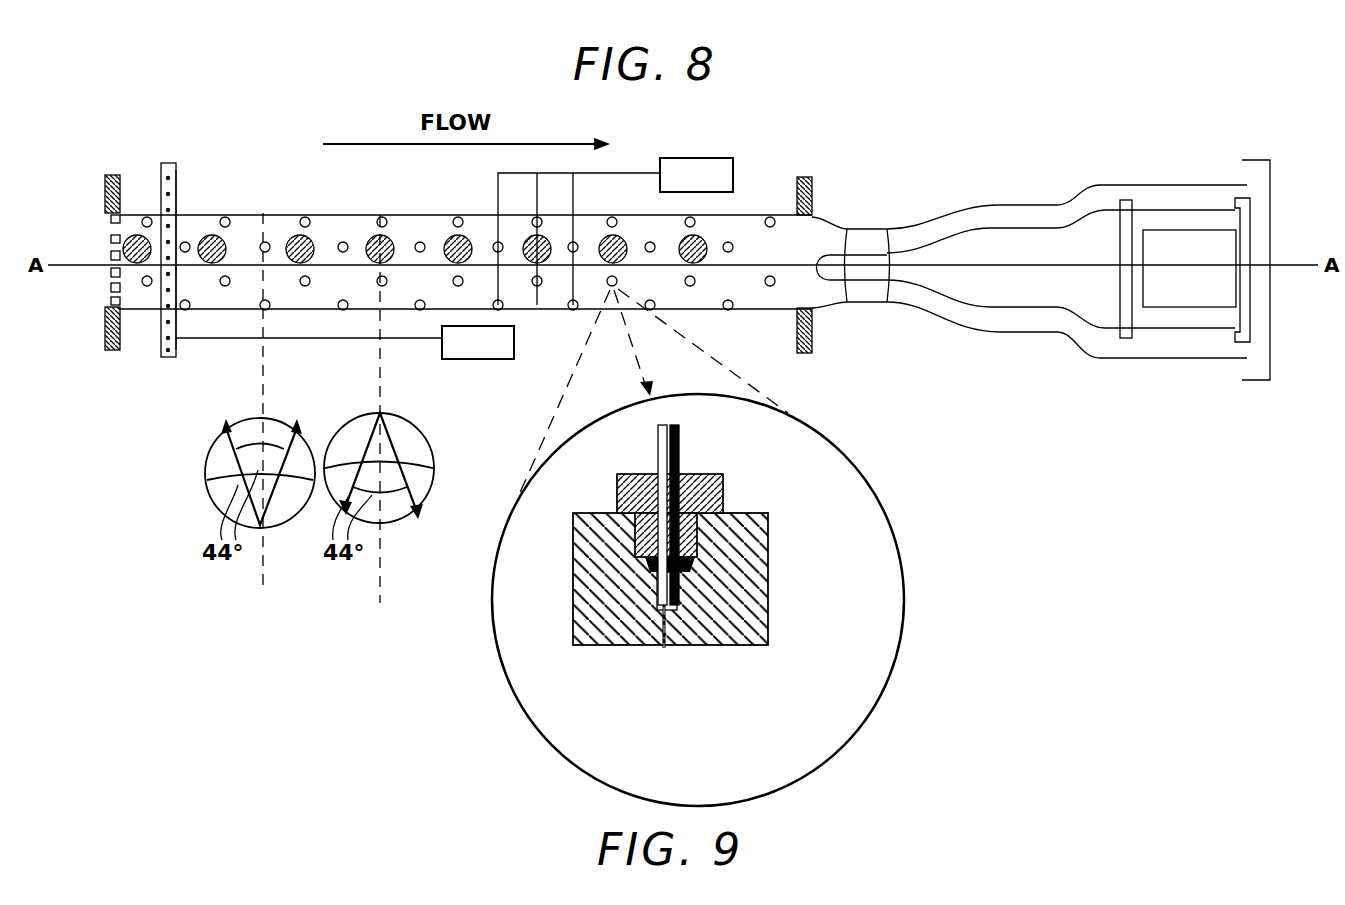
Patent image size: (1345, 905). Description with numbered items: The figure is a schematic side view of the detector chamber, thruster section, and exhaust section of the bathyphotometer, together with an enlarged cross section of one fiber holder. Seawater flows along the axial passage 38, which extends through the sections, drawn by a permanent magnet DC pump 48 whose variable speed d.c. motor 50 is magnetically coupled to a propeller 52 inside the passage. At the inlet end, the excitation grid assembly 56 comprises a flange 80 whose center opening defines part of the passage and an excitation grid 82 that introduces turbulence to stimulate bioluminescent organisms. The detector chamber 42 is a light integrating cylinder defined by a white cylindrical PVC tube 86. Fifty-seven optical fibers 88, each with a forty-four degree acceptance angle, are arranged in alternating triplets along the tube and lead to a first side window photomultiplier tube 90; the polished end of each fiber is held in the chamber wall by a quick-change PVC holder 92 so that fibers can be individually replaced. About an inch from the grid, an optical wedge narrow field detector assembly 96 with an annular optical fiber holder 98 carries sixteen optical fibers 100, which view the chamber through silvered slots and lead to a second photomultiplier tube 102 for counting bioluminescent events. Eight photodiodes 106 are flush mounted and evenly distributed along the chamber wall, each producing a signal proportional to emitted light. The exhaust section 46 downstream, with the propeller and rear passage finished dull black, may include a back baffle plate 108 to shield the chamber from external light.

In FIG. 8, the axial passage 38 is at (998, 318).
In FIG. 8, the detector chamber 42 is at (268, 200).
In FIG. 8, the exhaust section 46 is at (1162, 152).
In FIG. 8, the permanent magnet DC pump 48 is at (1012, 242).
In FIG. 8, the variable speed d.c. motor 50 is at (1185, 290).
In FIG. 8, the propeller 52 is at (865, 238).
In FIG. 8, the excitation grid assembly 56 is at (100, 203).
In FIG. 8, the flange 80 is at (104, 325).
In FIG. 8, the excitation grid 82 is at (122, 294).
In FIG. 8, the PVC tube 86 is at (750, 311).
In FIG. 9, the PVC tube 86 is at (582, 612).
In FIG. 8, the optical fibers 88 is at (421, 242).
In FIG. 9, the optical fibers 88 is at (680, 630).
In FIG. 8, the first side window photomultiplier tube 90 is at (702, 157).
In FIG. 9, the quick-change PVC holder 92 is at (724, 491).
In FIG. 8, the optical wedge narrow field detector assembly 96 is at (188, 166).
In FIG. 8, the annular optical fiber holder 98 is at (177, 204).
In FIG. 8, the optical fibers 100 is at (160, 180).
In FIG. 8, the second photomultiplier tube 102 is at (500, 359).
In FIG. 8, the photodiodes 106 is at (314, 245).
In FIG. 8, the back baffle plate 108 is at (1256, 160).